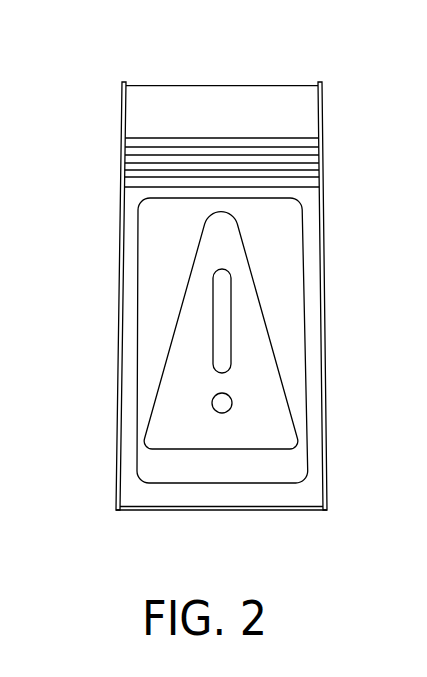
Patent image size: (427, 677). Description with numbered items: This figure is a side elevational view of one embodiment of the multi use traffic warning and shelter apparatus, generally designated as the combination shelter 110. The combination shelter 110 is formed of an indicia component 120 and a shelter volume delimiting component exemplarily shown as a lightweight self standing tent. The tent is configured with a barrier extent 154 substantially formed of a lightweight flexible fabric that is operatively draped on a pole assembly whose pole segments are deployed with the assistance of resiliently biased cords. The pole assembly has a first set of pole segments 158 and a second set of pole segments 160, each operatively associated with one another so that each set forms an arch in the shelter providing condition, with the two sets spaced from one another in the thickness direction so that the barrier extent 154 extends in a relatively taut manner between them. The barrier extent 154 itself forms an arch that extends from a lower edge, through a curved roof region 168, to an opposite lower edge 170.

The combination shelter 110 is at (340, 173).
The indicia component 120 is at (222, 247).
The barrier extent 154 is at (285, 113).
The first set of pole segments 158 is at (120, 370).
The second set of pole segments 160 is at (320, 380).
The curved roof region 168 is at (253, 97).
The opposite lower edge 170 is at (150, 509).